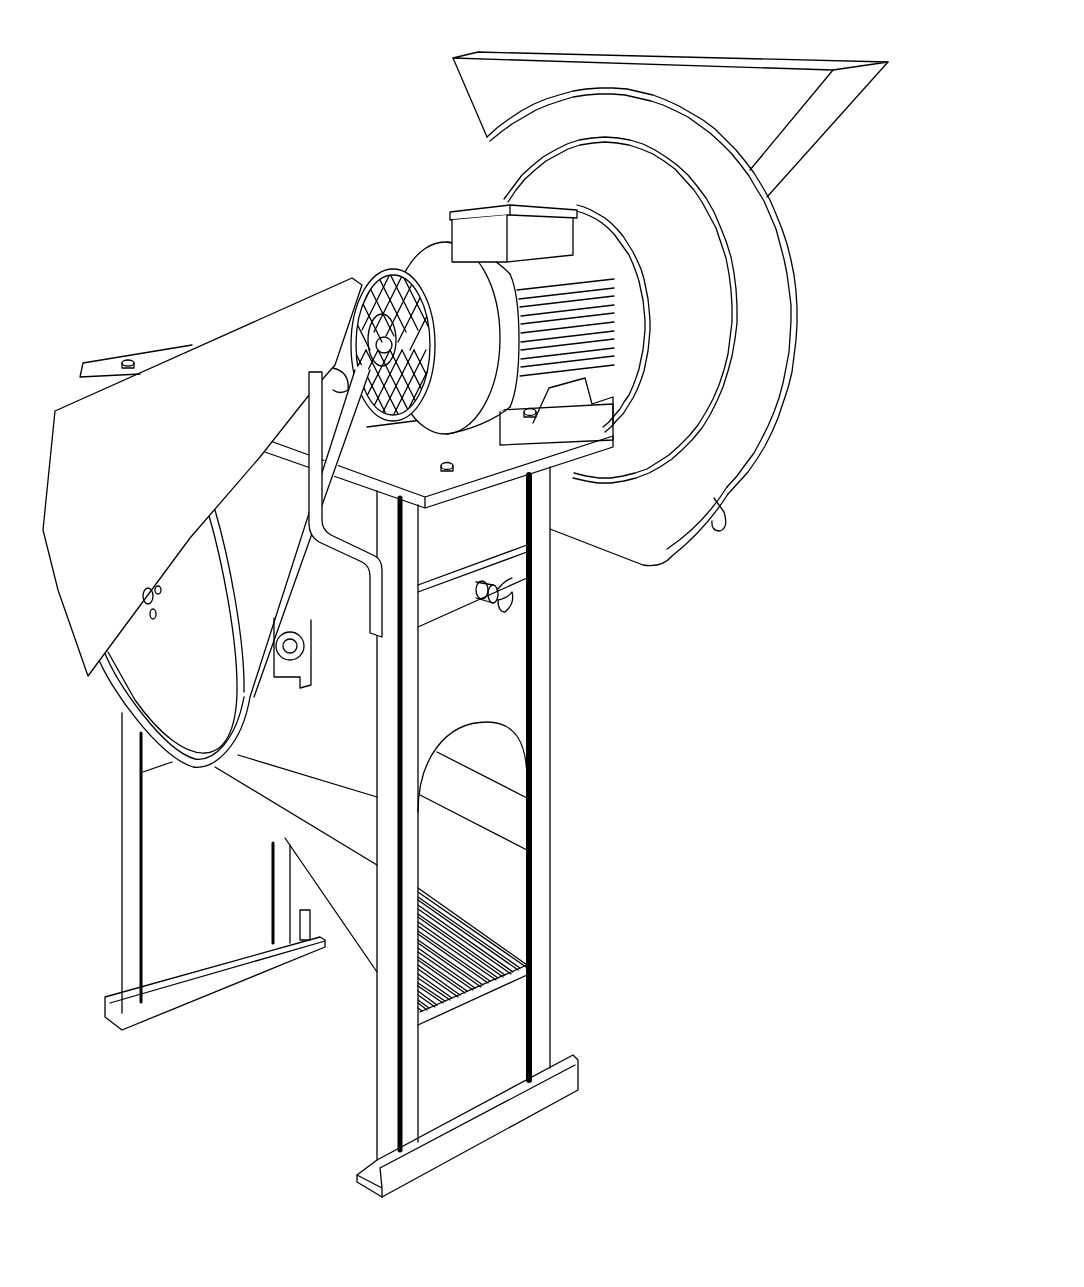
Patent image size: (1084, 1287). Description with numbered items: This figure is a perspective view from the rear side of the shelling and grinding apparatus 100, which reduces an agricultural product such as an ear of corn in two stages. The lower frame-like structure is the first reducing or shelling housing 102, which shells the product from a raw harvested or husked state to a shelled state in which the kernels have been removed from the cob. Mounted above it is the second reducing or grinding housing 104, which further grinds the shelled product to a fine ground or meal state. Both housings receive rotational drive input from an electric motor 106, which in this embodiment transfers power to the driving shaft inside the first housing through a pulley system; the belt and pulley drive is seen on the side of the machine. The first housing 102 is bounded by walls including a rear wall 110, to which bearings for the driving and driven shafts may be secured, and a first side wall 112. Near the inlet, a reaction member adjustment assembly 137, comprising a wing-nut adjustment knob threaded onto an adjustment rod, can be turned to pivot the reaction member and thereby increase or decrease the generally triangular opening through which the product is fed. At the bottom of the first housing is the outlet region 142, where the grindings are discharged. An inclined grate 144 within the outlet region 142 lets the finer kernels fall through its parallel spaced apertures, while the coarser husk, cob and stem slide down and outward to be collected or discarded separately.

The shelling and grinding apparatus 100 is at (166, 218).
The first reducing or shelling housing 102 is at (594, 661).
The second reducing or grinding housing 104 is at (876, 216).
The electric motor 106 is at (425, 256).
The rear wall 110 is at (354, 633).
The first side wall 112 is at (489, 689).
The reaction member adjustment assembly 137 is at (540, 604).
The outlet region 142 is at (506, 863).
The inclined grate 144 is at (452, 915).